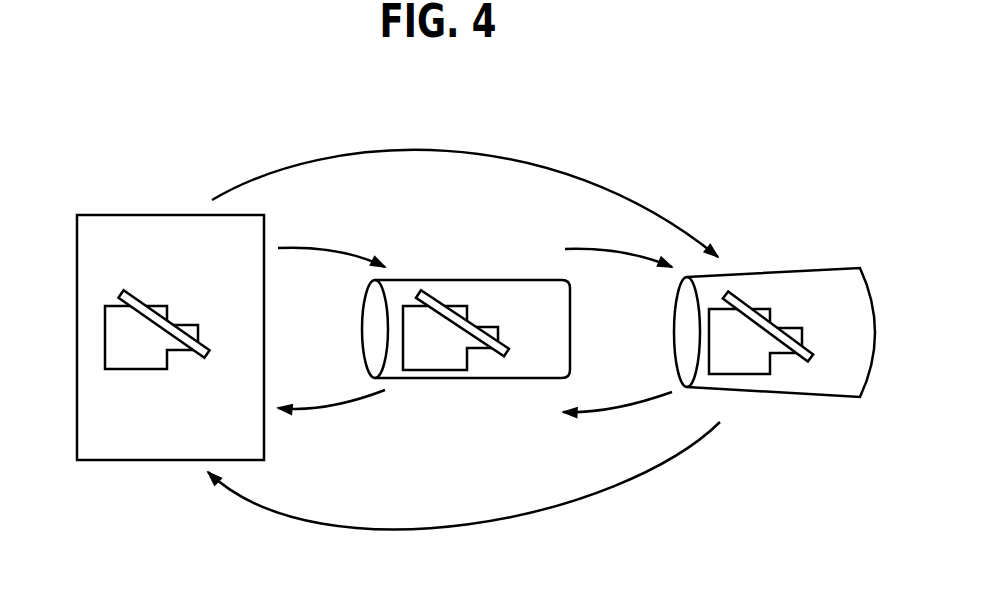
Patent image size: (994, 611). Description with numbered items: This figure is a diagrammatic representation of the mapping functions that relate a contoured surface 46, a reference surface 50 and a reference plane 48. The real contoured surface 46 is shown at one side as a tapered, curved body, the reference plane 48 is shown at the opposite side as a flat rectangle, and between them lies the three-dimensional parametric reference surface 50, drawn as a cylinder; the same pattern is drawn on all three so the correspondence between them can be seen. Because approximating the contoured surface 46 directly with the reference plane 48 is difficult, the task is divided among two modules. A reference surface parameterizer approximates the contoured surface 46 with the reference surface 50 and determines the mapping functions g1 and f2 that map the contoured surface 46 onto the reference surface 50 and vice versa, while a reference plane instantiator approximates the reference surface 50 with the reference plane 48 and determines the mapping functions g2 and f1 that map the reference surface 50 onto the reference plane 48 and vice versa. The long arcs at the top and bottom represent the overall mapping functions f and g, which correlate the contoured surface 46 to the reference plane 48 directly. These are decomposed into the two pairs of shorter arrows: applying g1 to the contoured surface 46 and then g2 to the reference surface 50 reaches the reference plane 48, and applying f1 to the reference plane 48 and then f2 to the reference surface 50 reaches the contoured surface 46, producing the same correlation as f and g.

The contoured surface 46 is at (812, 283).
The reference plane 48 is at (140, 445).
The reference surface 50 is at (462, 297).
The mapping function f is at (442, 147).
The mapping function f1 is at (328, 245).
The mapping function f2 is at (603, 247).
The mapping function g is at (443, 535).
The mapping function g1 is at (613, 412).
The mapping function g2 is at (340, 412).